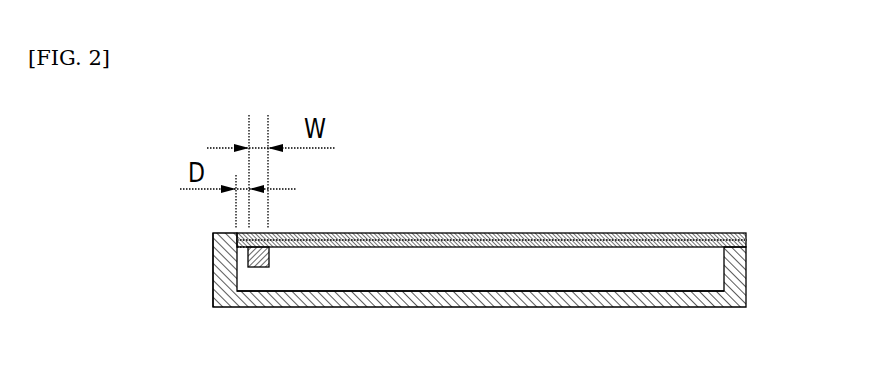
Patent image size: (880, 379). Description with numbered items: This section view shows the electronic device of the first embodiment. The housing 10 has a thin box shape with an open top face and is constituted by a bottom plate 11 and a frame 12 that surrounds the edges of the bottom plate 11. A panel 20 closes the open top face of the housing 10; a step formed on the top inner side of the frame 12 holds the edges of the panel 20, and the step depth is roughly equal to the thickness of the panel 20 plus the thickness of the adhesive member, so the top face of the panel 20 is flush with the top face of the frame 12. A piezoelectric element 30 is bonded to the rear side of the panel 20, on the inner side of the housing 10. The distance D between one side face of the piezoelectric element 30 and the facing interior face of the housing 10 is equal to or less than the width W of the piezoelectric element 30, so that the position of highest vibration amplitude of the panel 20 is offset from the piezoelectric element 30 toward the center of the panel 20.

The housing 10 is at (484, 307).
The bottom plate 11 is at (545, 307).
The frame 12 is at (212, 278).
The panel 20 is at (478, 232).
The piezoelectric element 30 is at (213, 265).